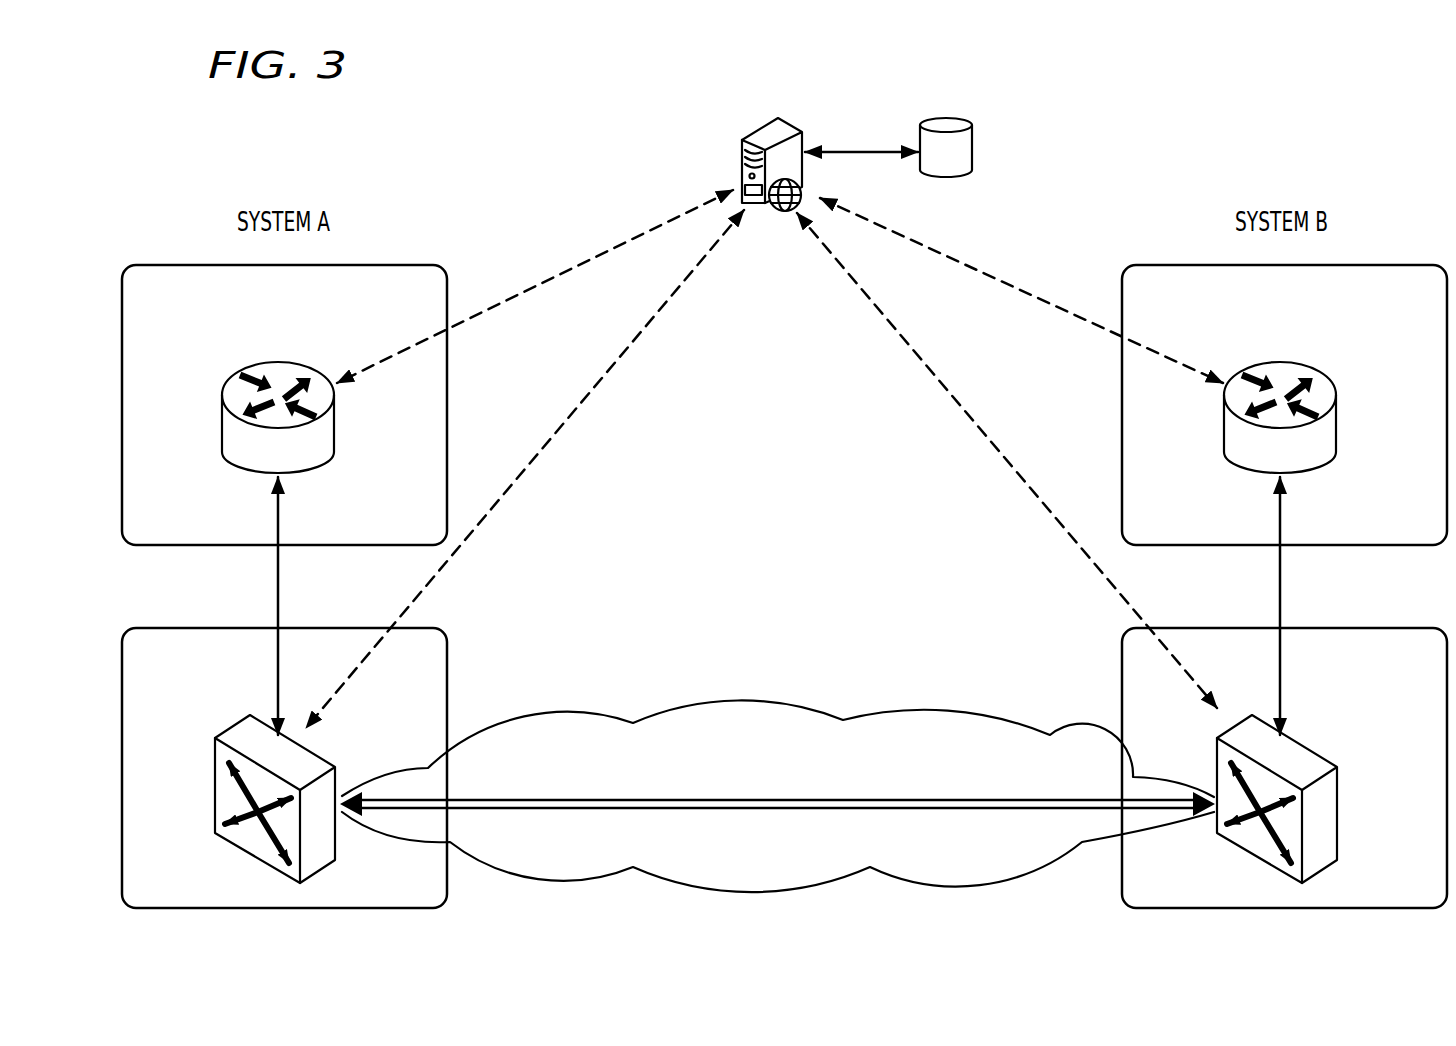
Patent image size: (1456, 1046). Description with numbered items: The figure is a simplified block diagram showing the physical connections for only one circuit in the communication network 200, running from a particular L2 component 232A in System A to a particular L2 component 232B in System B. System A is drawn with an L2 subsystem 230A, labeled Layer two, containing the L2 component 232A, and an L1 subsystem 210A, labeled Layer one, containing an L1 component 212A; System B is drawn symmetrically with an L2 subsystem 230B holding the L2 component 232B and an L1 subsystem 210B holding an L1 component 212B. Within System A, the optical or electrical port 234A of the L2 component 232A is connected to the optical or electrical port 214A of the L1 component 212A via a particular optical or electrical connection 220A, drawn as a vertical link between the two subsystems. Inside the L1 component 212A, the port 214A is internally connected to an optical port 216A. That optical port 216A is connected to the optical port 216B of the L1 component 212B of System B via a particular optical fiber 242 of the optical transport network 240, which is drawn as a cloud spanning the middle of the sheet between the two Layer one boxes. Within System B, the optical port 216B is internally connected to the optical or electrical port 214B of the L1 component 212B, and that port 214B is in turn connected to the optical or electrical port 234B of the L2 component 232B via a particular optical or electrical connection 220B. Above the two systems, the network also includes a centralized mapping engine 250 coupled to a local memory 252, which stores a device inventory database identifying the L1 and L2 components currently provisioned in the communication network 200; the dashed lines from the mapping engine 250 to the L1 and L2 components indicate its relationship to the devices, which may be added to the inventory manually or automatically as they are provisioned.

The communication network 200 is at (296, 133).
The L1 subsystem 210A is at (210, 628).
The L1 subsystem 210B is at (1355, 628).
The L1 component 212A is at (248, 853).
The L1 component 212B is at (1338, 833).
The optical or electrical port 214A is at (276, 728).
The optical or electrical port 214B is at (1288, 730).
The optical port 216A is at (343, 797).
The optical port 216B is at (1212, 797).
The optical or electrical connection 220A is at (282, 579).
The optical or electrical connection 220B is at (1276, 579).
The L2 subsystem 230A is at (210, 265).
The L2 subsystem 230B is at (1355, 265).
The L2 component 232A is at (280, 362).
The L2 component 232B is at (1282, 362).
The optical or electrical port 234A is at (272, 476).
The optical or electrical port 234B is at (1288, 476).
The optical transport network 240 is at (794, 702).
The optical fiber 242 is at (964, 800).
The centralized mapping engine 250 is at (758, 128).
The local memory 252 is at (974, 152).